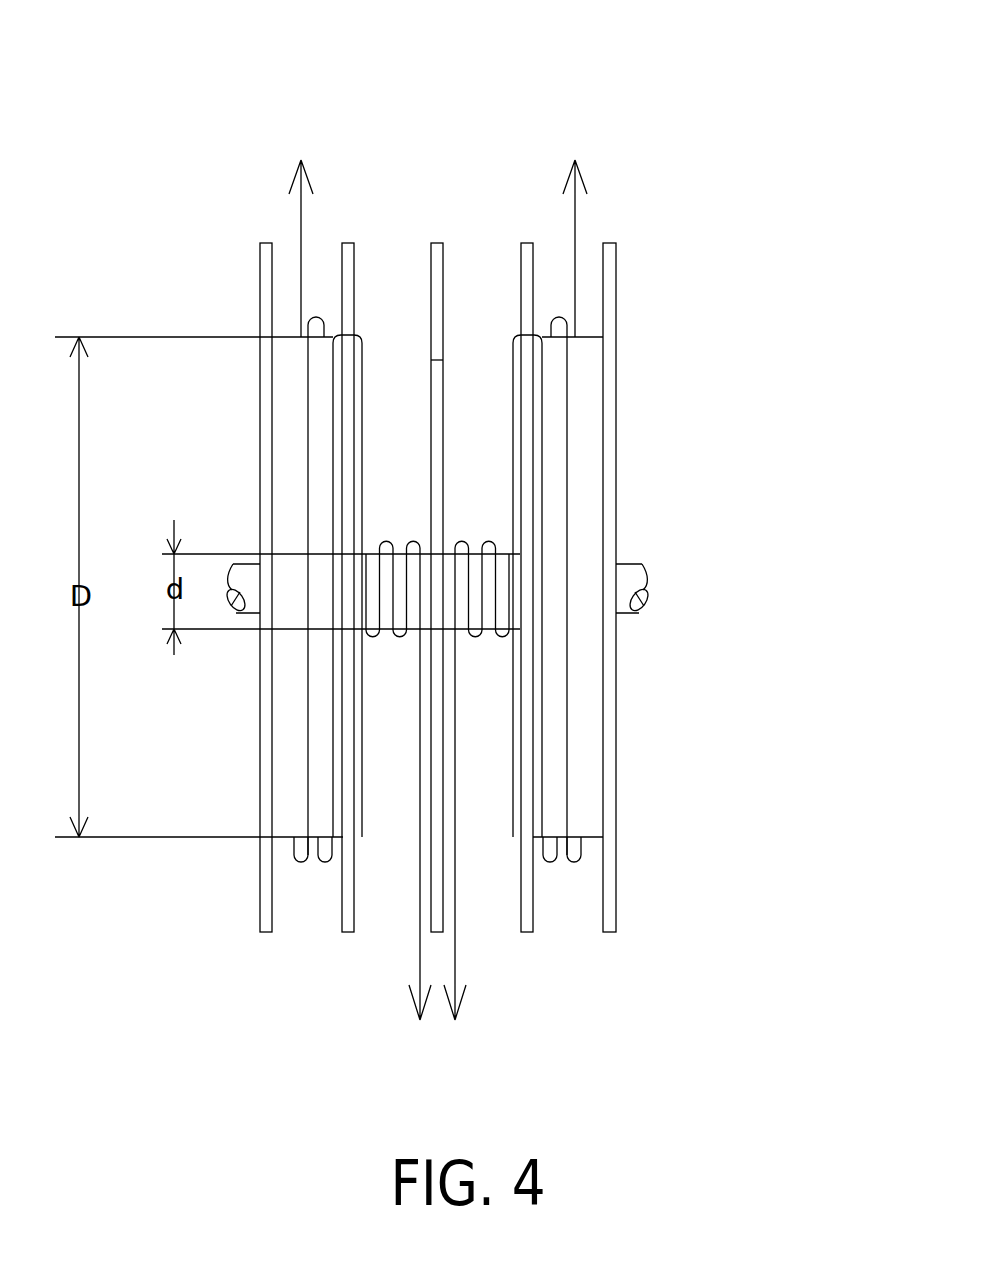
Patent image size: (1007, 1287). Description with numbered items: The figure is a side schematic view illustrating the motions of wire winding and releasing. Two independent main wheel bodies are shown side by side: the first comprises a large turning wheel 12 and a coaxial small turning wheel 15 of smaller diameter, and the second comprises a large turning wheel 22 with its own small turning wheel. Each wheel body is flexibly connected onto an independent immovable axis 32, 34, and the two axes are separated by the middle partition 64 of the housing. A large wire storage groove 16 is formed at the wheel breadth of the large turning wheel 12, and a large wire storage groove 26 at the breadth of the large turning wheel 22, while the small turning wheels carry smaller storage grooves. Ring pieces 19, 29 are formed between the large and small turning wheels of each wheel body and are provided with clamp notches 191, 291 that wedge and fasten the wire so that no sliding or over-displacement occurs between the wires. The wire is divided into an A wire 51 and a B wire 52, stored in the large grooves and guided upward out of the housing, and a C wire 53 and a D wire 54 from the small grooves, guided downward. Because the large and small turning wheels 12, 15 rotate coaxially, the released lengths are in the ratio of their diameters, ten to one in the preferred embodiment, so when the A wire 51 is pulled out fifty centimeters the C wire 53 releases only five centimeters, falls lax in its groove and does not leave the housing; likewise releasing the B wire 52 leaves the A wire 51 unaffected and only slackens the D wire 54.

The large turning wheel 12 is at (288, 735).
The small turning wheel 15 is at (351, 320).
The large wire storage groove 16 is at (293, 893).
The ring piece 19 is at (342, 923).
The clamp notch 191 is at (400, 585).
The large turning wheel 22 is at (593, 362).
The large wire storage groove 26 is at (590, 295).
The ring piece 29 is at (523, 913).
The clamp notch 291 is at (525, 263).
The immovable axis 32 is at (242, 580).
The immovable axis 34 is at (622, 580).
The A wire 51 is at (302, 228).
The B wire 52 is at (572, 233).
The C wire 53 is at (421, 740).
The D wire 54 is at (447, 933).
The middle partition 64 is at (438, 367).